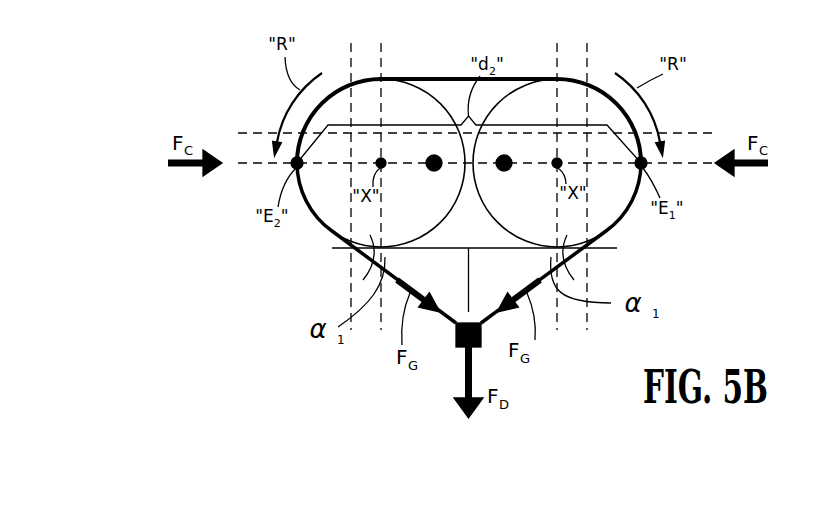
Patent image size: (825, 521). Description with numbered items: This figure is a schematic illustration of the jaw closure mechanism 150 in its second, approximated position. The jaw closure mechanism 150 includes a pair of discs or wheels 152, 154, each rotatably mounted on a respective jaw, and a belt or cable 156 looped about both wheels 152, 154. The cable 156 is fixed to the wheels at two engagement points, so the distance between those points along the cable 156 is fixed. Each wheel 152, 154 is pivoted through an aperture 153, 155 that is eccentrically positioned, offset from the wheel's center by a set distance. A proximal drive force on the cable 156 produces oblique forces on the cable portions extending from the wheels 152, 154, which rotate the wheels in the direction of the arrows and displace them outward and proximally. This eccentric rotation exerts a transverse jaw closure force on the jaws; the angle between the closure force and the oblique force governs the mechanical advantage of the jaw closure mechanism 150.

The jaw closure mechanism 150 is at (325, 43).
The wheel 152 is at (618, 206).
The aperture 153 is at (506, 170).
The wheel 154 is at (323, 205).
The aperture 155 is at (432, 170).
The cable 156 is at (432, 79).